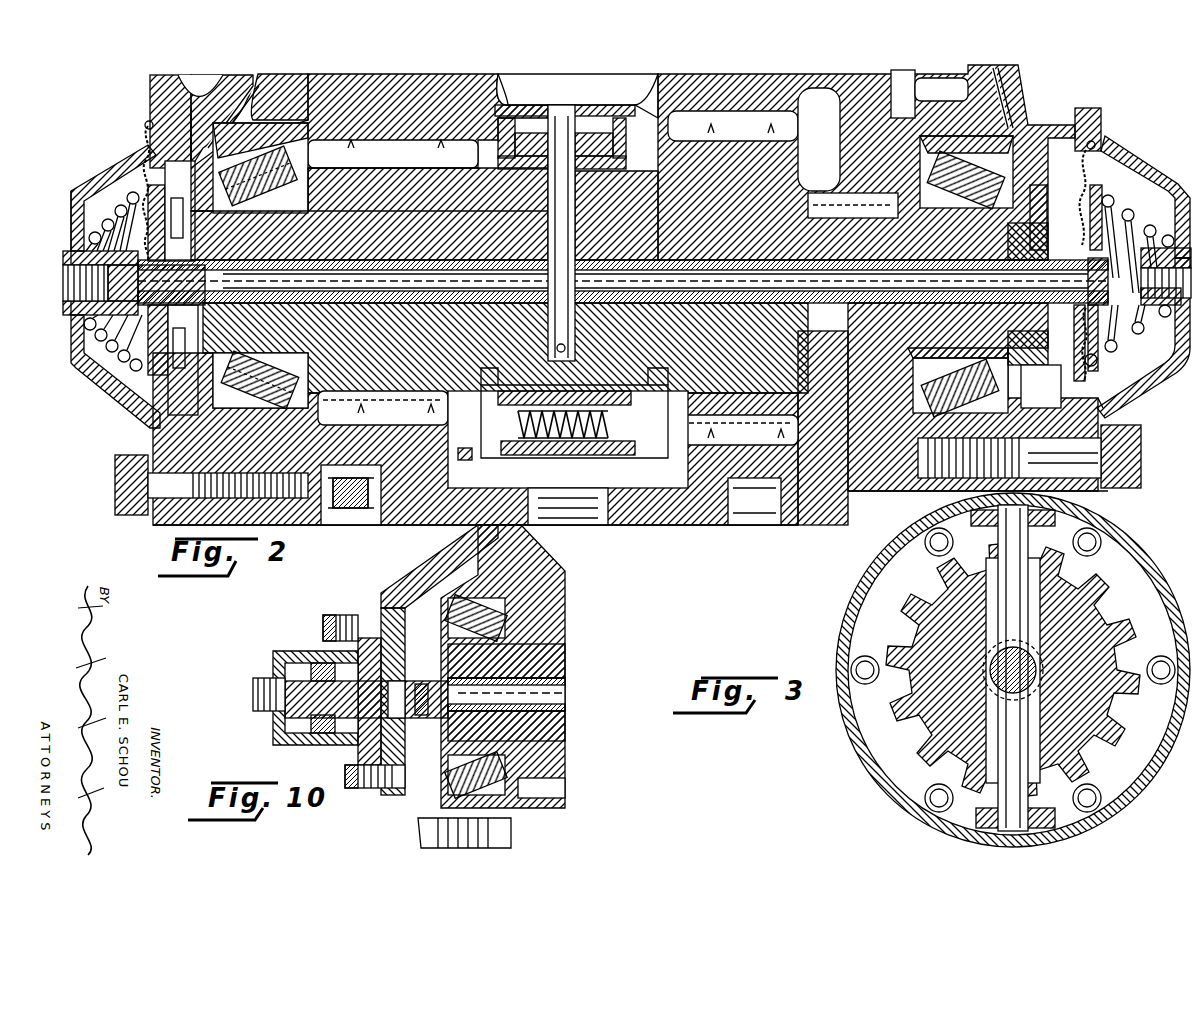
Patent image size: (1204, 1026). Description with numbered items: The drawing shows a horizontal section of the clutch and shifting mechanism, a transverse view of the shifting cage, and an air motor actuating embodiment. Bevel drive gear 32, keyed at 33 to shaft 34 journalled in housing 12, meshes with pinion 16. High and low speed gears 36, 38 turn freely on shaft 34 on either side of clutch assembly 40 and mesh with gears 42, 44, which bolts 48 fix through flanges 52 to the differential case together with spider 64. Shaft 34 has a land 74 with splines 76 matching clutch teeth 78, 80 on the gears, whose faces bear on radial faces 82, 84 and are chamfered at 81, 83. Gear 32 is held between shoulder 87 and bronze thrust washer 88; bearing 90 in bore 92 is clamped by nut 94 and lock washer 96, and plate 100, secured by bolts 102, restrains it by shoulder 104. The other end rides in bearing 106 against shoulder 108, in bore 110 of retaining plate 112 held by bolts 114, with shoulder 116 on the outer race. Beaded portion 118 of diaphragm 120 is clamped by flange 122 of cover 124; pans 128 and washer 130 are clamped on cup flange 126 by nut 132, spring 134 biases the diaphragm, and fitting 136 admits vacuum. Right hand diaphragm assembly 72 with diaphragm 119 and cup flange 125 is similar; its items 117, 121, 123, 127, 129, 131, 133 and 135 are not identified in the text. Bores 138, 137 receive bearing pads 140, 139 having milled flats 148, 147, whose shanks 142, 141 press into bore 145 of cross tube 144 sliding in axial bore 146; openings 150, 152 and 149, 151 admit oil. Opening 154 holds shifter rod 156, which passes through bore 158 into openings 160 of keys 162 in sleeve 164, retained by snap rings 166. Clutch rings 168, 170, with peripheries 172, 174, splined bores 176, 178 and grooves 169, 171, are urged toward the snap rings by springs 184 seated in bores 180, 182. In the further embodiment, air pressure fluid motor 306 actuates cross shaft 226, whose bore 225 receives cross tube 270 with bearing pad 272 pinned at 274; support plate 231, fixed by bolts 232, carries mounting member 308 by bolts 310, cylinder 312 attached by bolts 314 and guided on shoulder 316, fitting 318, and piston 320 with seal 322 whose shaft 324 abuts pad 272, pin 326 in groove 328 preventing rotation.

In FIG. 10, the housing 12 is at (515, 555).
In FIG. 2, the pinion 16 is at (816, 113).
In FIG. 2, the bevel drive gear 32 is at (815, 150).
In FIG. 2, the key 33 is at (855, 212).
In FIG. 2, the shaft 34 is at (686, 331).
In FIG. 2, the high speed gear 36 is at (700, 103).
In FIG. 2, the low speed gear 38 is at (357, 132).
In FIG. 10, the low speed gear 38 is at (555, 605).
In FIG. 2, the clutch assembly 40 is at (520, 92).
In FIG. 2, the gear 42 is at (790, 430).
In FIG. 2, the gear 44 is at (470, 455).
In FIG. 10, the gear 44 is at (535, 810).
In FIG. 2, the through bolts 48 is at (745, 512).
In FIG. 2, the flanges 52 is at (430, 470).
In FIG. 2, the spider 64 is at (580, 512).
In FIG. 2, the right hand diaphragm assembly 72 is at (95, 160).
In FIG. 2, the annular shoulder 74 is at (600, 185).
In FIG. 2, the peripheral splines 76 is at (556, 395).
In FIG. 2, the radial clutch teeth 78 is at (638, 162).
In FIG. 2, the radial clutch teeth 80 is at (492, 170).
In FIG. 2, the chamfer 81 is at (620, 190).
In FIG. 2, the radial face 82 is at (625, 175).
In FIG. 2, the chamfer 83 is at (518, 190).
In FIG. 2, the radial face 84 is at (505, 190).
In FIG. 2, the shoulder 87 is at (823, 424).
In FIG. 2, the thrust washer 88 is at (874, 164).
In FIG. 2, the bearing 90 is at (950, 345).
In FIG. 2, the bore 92 is at (950, 130).
In FIG. 2, the nut 94 is at (990, 313).
In FIG. 2, the lock washer 96 is at (972, 226).
In FIG. 2, the plate 100 is at (1070, 100).
In FIG. 2, the bolts 102 is at (1115, 420).
In FIG. 2, the internal shoulder 104 is at (1005, 408).
In FIG. 2, the bearing 106 is at (265, 362).
In FIG. 10, the bearing 106 is at (445, 760).
In FIG. 2, the shoulder 108 is at (346, 210).
In FIG. 2, the bore 110 is at (260, 166).
In FIG. 2, the retaining plate 112 is at (225, 76).
In FIG. 2, the bolts 114 is at (110, 450).
In FIG. 2, the shoulder 116 is at (475, 439).
In FIG. 2, the seal 117 is at (1090, 135).
In FIG. 2, the beaded peripheral portion 118 is at (138, 115).
In FIG. 2, the diaphragm 119 is at (1102, 200).
In FIG. 2, the flexible diaphragm 120 is at (136, 150).
In FIG. 2, the cover 121 is at (1086, 100).
In FIG. 2, the peripheral flange 122 is at (142, 90).
In FIG. 2, the cap 123 is at (1165, 180).
In FIG. 2, the cover member 124 is at (63, 183).
In FIG. 2, the cup flange 125 is at (1041, 386).
In FIG. 2, the cup flange 126 is at (174, 218).
In FIG. 2, the ring 127 is at (1032, 177).
In FIG. 2, the diaphragm pans 128 is at (100, 395).
In FIG. 2, the roller 129 is at (1125, 232).
In FIG. 2, the washer 130 is at (122, 352).
In FIG. 2, the roller 131 is at (1128, 335).
In FIG. 2, the nut 132 is at (111, 279).
In FIG. 2, the roller 133 is at (1148, 249).
In FIG. 2, the conical helical spring 134 is at (70, 320).
In FIG. 2, the coupling 135 is at (1157, 310).
In FIG. 2, the fluid fitting 136 is at (55, 245).
In FIG. 2, the axial end bore 137 is at (1028, 241).
In FIG. 2, the axial end bore 138 is at (180, 240).
In FIG. 2, the bearing pad 139 is at (1050, 304).
In FIG. 2, the bearing pad 140 is at (168, 296).
In FIG. 2, the shank 141 is at (990, 272).
In FIG. 2, the shank 142 is at (216, 270).
In FIG. 2, the cross tube 144 is at (392, 300).
In FIG. 3, the cross tube 144 is at (1028, 655).
In FIG. 2, the bore 145 is at (414, 250).
In FIG. 2, the axial bore 146 is at (448, 300).
In FIG. 3, the axial bore 146 is at (975, 640).
In FIG. 2, the milled flat 147 is at (1080, 270).
In FIG. 2, the milled flat 148 is at (171, 285).
In FIG. 2, the opening 149 is at (1025, 117).
In FIG. 2, the opening 150 is at (212, 110).
In FIG. 2, the opening 151 is at (941, 88).
In FIG. 2, the opening 152 is at (272, 92).
In FIG. 2, the diametral opening 154 is at (575, 268).
In FIG. 3, the diametral opening 154 is at (1025, 676).
In FIG. 2, the transverse shifter rod 156 is at (540, 318).
In FIG. 3, the transverse shifter rod 156 is at (995, 715).
In FIG. 2, the diametral bore 158 is at (590, 318).
In FIG. 3, the diametral bore 158 is at (980, 595).
In FIG. 2, the openings 160 is at (553, 97).
In FIG. 3, the openings 160 is at (1020, 528).
In FIG. 2, the key members 162 is at (600, 97).
In FIG. 3, the key members 162 is at (1070, 492).
In FIG. 2, the shifting sleeve 164 is at (490, 100).
In FIG. 3, the shifting sleeve 164 is at (1125, 545).
In FIG. 2, the snap rings 166 is at (490, 112).
In FIG. 2, the clutch ring 168 is at (618, 405).
In FIG. 2, the grooves 169 is at (606, 130).
In FIG. 2, the clutch ring 170 is at (525, 445).
In FIG. 2, the grooves 171 is at (507, 135).
In FIG. 3, the grooves 171 is at (990, 530).
In FIG. 2, the smooth outer periphery 172 is at (615, 108).
In FIG. 2, the smooth outer periphery 174 is at (490, 97).
In FIG. 2, the splined inner periphery 176 is at (625, 384).
In FIG. 2, the splined inner periphery 178 is at (495, 380).
In FIG. 2, the shallow bores 180 is at (585, 392).
In FIG. 2, the shallow bores 182 is at (525, 392).
In FIG. 2, the coil springs 184 is at (462, 440).
In FIG. 3, the coil springs 184 is at (925, 540).
In FIG. 10, the bore 225 is at (556, 700).
In FIG. 10, the cross shaft 226 is at (556, 652).
In FIG. 10, the support plate 231 is at (425, 565).
In FIG. 10, the bolts 232 is at (420, 830).
In FIG. 10, the cross tube 270 is at (556, 675).
In FIG. 10, the bearing pad 272 is at (395, 673).
In FIG. 10, the pin 274 is at (414, 676).
In FIG. 10, the fluid motor 306 is at (245, 650).
In FIG. 10, the air chamber mounting member 308 is at (372, 600).
In FIG. 10, the bolts 310 is at (345, 780).
In FIG. 10, the air chamber cylinder 312 is at (290, 645).
In FIG. 10, the bolts 314 is at (320, 607).
In FIG. 10, the internal shoulder 316 is at (322, 737).
In FIG. 10, the fluid fitting 318 is at (248, 680).
In FIG. 10, the piston 320 is at (282, 660).
In FIG. 10, the peripheral seal 322 is at (275, 722).
In FIG. 10, the shaft portion 324 is at (310, 655).
In FIG. 10, the flat sided pin 326 is at (320, 700).
In FIG. 10, the axial groove 328 is at (365, 700).